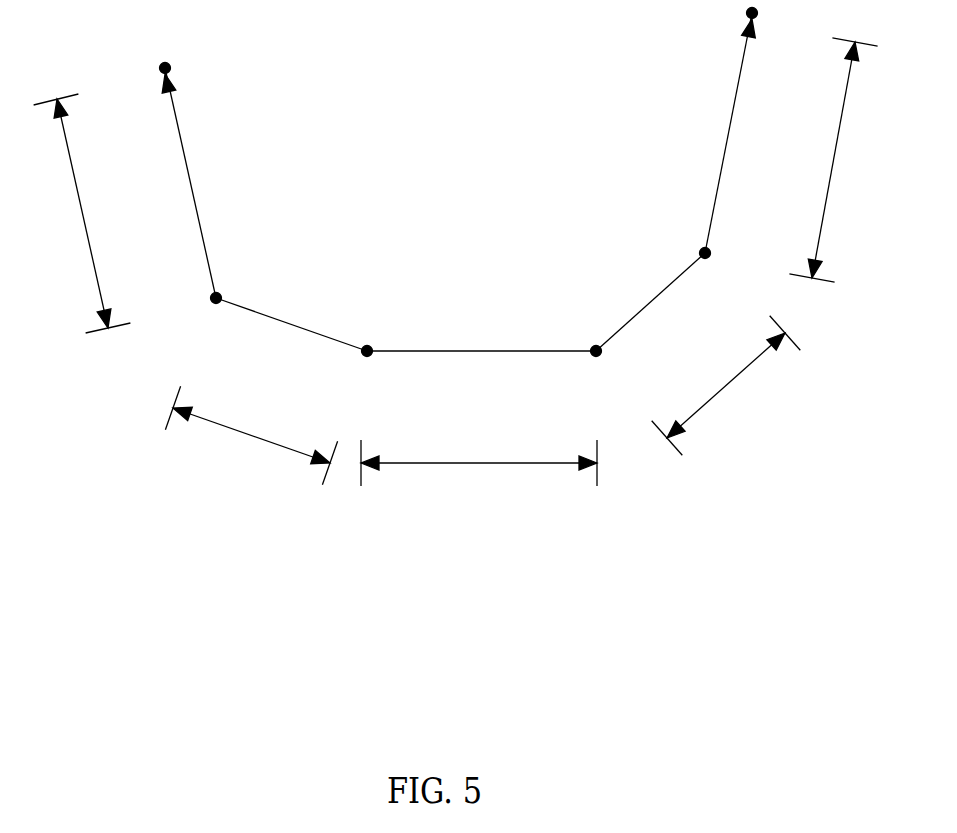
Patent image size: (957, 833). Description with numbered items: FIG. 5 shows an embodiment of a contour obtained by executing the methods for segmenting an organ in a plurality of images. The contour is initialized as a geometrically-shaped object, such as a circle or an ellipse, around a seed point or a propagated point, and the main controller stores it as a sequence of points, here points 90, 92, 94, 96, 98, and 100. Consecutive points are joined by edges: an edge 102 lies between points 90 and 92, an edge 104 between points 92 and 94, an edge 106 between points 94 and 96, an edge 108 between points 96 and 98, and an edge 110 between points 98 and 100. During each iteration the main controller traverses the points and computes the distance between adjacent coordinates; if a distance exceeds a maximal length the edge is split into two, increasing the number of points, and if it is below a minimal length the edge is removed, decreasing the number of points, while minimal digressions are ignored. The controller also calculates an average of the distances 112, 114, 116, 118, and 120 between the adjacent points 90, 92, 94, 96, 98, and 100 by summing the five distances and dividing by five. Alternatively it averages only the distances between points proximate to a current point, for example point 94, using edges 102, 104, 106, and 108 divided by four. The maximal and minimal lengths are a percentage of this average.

The point 90 is at (163, 66).
The point 92 is at (213, 304).
The point 94 is at (360, 357).
The point 96 is at (591, 382).
The point 98 is at (709, 259).
The point 100 is at (756, 10).
The edge 102 is at (200, 217).
The edge 104 is at (290, 325).
The edge 106 is at (486, 350).
The edge 108 is at (645, 307).
The edge 110 is at (729, 130).
The distance 112 is at (88, 245).
The distance 114 is at (232, 429).
The distance 116 is at (471, 463).
The distance 118 is at (745, 369).
The distance 120 is at (834, 160).